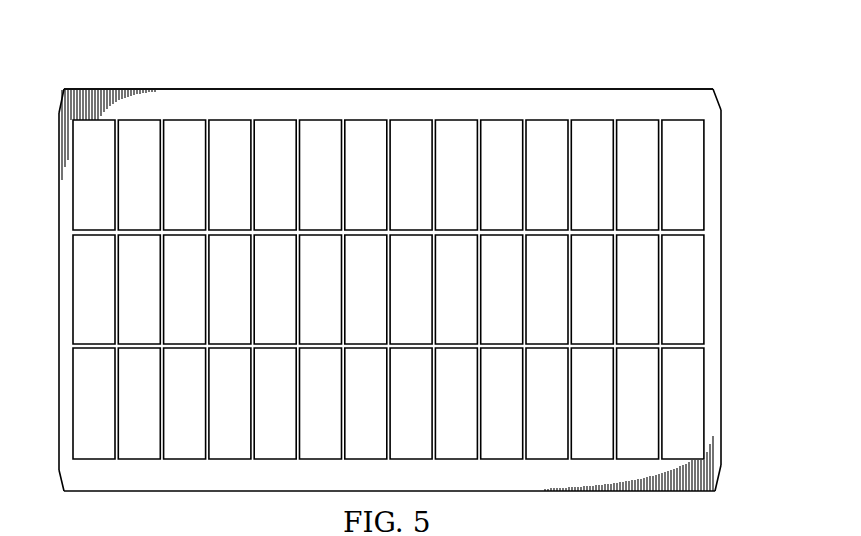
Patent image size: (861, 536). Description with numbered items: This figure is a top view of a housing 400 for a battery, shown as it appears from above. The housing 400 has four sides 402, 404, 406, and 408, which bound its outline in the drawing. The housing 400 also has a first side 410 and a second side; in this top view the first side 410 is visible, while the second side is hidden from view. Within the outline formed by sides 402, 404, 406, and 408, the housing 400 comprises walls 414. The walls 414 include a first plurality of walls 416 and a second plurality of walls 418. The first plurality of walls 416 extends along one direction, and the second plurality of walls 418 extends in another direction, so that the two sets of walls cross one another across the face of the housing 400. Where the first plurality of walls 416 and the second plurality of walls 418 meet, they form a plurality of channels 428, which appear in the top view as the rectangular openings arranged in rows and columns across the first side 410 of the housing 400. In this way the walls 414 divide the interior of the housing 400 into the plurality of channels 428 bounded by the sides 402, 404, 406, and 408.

The housing 400 is at (677, 50).
The side 402 is at (57, 121).
The side 404 is at (389, 88).
The side 406 is at (722, 267).
The side 408 is at (516, 492).
The first side 410 is at (470, 96).
The walls 414 is at (204, 141).
The first plurality of walls 416 is at (688, 346).
The second plurality of walls 418 is at (574, 136).
The plurality of channels 428 is at (273, 142).